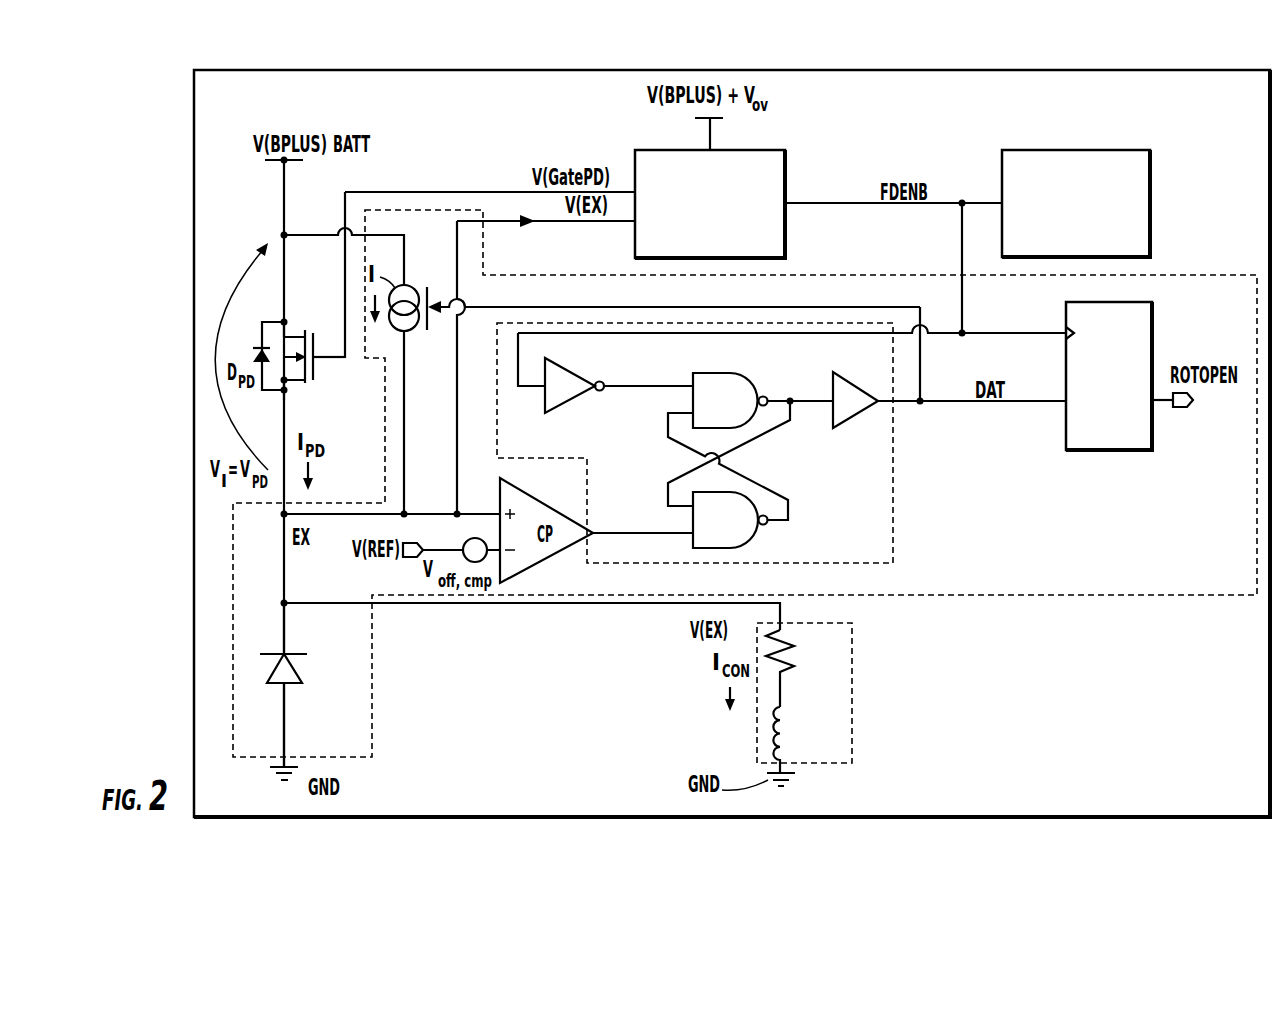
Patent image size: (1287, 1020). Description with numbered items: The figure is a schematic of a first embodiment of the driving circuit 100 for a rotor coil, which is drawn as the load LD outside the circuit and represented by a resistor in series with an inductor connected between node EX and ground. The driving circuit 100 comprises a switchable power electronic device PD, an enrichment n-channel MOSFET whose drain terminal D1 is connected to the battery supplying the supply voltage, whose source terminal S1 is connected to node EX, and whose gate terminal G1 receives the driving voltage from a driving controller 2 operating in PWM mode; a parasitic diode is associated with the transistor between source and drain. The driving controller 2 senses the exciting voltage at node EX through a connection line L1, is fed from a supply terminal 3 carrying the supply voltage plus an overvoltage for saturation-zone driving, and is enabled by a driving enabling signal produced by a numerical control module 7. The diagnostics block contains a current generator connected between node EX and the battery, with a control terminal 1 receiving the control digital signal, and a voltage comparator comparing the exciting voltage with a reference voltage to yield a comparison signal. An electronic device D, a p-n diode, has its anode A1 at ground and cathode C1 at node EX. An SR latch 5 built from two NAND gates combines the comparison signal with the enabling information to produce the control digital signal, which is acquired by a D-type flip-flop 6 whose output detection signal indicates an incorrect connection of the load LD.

The driving circuit 100 is at (723, 70).
The control terminal 1 is at (410, 286).
The driving controller 2 is at (787, 168).
The supply terminal 3 is at (710, 140).
The asynchronous sequential logic memory device 5 is at (893, 480).
The synchronous memory device 6 is at (1153, 445).
The numerical control module 7 is at (1152, 170).
The switchable power electronic device PD is at (316, 340).
The drain terminal D1 is at (284, 256).
The gate terminal G1 is at (315, 362).
The source terminal S1 is at (284, 410).
The connection line L1 is at (500, 218).
The rotor coil load LD is at (852, 670).
The electronic device D is at (297, 672).
The cathode C1 is at (284, 622).
The anode A1 is at (284, 720).